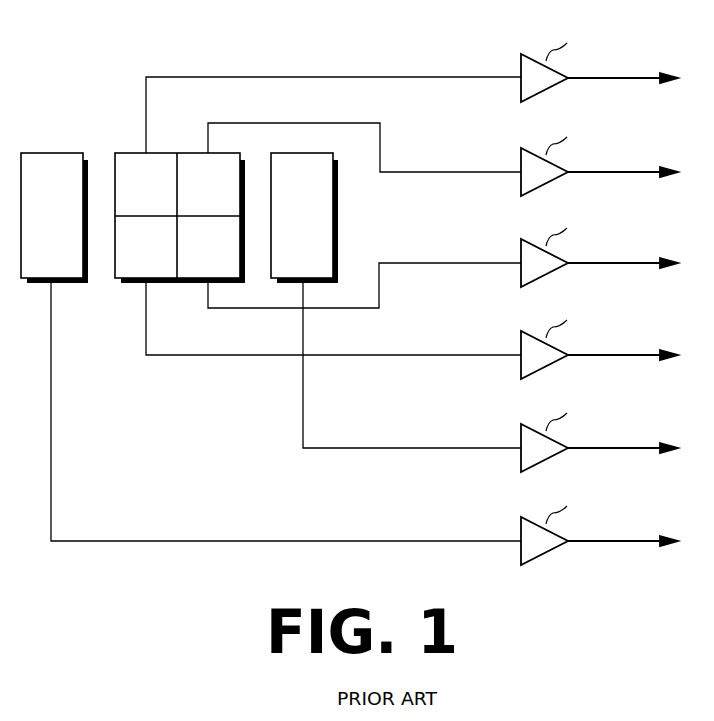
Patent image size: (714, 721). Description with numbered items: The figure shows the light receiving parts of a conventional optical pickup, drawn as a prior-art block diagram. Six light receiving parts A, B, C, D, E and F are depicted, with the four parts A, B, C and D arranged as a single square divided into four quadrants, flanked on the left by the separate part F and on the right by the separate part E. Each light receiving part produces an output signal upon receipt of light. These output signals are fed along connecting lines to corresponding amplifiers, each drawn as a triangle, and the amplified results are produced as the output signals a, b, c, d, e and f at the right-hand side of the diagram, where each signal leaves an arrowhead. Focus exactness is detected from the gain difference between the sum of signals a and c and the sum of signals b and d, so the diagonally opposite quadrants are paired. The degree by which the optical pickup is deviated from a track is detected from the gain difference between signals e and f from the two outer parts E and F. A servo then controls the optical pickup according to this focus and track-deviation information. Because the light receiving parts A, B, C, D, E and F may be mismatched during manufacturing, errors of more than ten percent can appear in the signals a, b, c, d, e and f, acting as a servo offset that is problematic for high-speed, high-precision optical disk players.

The light receiving part A is at (146, 184).
The light receiving part B is at (208, 184).
The light receiving part C is at (208, 247).
The light receiving part D is at (146, 247).
The light receiving part E is at (304, 218).
The light receiving part F is at (54, 218).
The output signal a is at (612, 59).
The output signal b is at (612, 153).
The output signal c is at (611, 244).
The output signal d is at (612, 336).
The output signal e is at (612, 429).
The output signal f is at (611, 522).